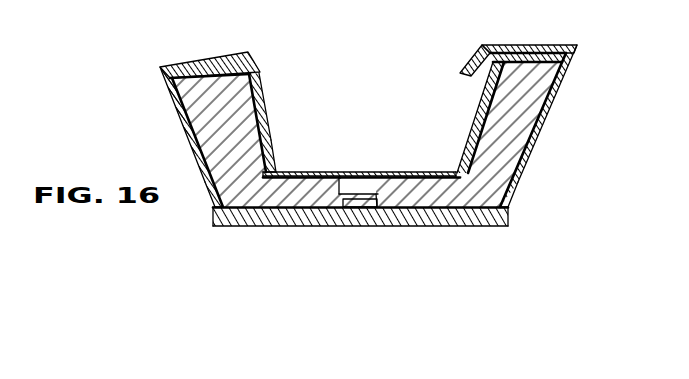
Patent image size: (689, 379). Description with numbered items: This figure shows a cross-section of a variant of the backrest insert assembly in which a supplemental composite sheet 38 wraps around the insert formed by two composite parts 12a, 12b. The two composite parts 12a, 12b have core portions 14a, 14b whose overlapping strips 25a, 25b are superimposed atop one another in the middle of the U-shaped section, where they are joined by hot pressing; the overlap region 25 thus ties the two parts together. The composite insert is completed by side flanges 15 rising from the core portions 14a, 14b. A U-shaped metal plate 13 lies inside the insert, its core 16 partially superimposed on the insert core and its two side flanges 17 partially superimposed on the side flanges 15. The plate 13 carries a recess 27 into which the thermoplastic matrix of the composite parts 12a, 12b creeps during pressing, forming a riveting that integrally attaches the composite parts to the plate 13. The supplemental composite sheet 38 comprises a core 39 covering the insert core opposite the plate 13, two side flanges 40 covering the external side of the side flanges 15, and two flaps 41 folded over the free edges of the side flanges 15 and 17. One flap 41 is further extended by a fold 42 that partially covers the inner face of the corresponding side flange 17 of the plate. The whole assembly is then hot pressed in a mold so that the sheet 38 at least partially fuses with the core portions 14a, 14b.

The composite part 12a is at (515, 213).
The composite part 12b is at (212, 214).
The metal plate 13 is at (280, 157).
The core portion 14a is at (448, 193).
The core portion 14b is at (272, 195).
The side flange 15 is at (210, 142).
The core 16 is at (433, 172).
The side flange 17 is at (248, 102).
The insert 25 is at (358, 211).
The overlapping strip 25a is at (348, 200).
The overlapping strip 25b is at (347, 211).
The recess 27 is at (313, 175).
The supplemental composite sheet 38 is at (498, 233).
The core 39 is at (423, 217).
The side flange 40 is at (172, 96).
The flap 41 is at (229, 62).
The fold 42 is at (474, 56).